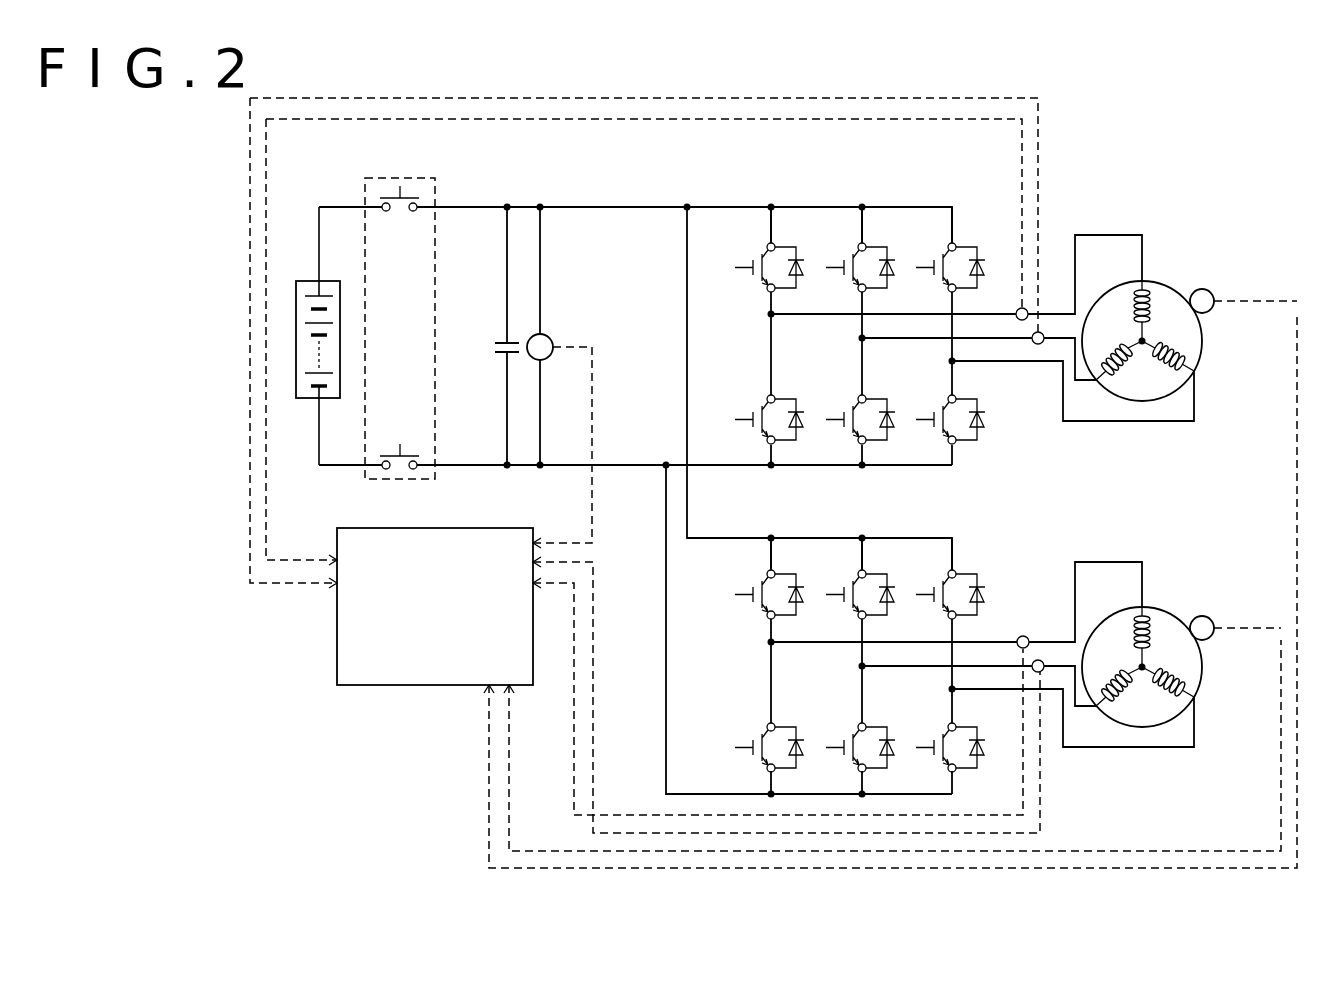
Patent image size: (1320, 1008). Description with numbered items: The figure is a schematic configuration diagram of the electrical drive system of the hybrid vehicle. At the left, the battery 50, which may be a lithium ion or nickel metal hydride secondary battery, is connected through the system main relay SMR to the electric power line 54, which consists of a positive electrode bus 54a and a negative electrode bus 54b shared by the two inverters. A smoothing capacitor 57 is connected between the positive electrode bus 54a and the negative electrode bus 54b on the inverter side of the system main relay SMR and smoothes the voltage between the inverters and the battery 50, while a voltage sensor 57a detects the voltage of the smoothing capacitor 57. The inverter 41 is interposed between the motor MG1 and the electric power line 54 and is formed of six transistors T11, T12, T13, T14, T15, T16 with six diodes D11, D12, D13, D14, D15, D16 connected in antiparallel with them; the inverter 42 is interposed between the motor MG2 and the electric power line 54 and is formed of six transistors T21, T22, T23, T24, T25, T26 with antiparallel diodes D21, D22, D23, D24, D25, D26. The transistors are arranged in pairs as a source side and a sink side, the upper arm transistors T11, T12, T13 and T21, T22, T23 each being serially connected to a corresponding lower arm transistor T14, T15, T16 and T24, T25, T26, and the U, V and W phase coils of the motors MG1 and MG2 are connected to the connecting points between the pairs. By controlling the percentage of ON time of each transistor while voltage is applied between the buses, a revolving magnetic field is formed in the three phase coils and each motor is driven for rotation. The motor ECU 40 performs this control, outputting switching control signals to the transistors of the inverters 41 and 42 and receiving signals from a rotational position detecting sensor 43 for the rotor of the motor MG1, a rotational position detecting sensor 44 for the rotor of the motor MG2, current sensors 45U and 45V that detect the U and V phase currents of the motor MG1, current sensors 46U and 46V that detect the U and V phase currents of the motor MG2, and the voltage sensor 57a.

The motor ECU 40 is at (434, 686).
The inverter 41 is at (905, 198).
The inverter 42 is at (900, 525).
The rotational position detecting sensor 43 is at (1202, 289).
The rotational position detecting sensor 44 is at (1202, 616).
The current sensor 45U is at (1020, 322).
The current sensor 45V is at (1038, 345).
The current sensor 46U is at (1022, 636).
The current sensor 46V is at (1040, 660).
The battery 50 is at (318, 282).
The electric power line 54 is at (700, 165).
The positive electrode bus 54a is at (653, 207).
The negative electrode bus 54b is at (607, 465).
The smoothing capacitor 57 is at (508, 338).
The voltage sensor 57a is at (556, 335).
The system main relay SMR is at (404, 178).
The motor MG1 is at (1105, 287).
The motor MG2 is at (1108, 608).
The transistor T11 is at (740, 290).
The transistor T12 is at (834, 278).
The transistor T13 is at (925, 278).
The transistor T14 is at (734, 431).
The transistor T15 is at (834, 431).
The transistor T16 is at (924, 431).
The transistor T21 is at (736, 615).
The transistor T22 is at (825, 607).
The transistor T23 is at (925, 607).
The transistor T24 is at (732, 758).
The transistor T25 is at (824, 758).
The transistor T26 is at (918, 758).
The diode D11 is at (804, 250).
The diode D12 is at (897, 249).
The diode D13 is at (986, 247).
The diode D14 is at (804, 401).
The diode D15 is at (897, 401).
The diode D16 is at (987, 404).
The diode D21 is at (804, 576).
The diode D22 is at (897, 576).
The diode D23 is at (986, 575).
The diode D24 is at (805, 729).
The diode D25 is at (895, 730).
The diode D26 is at (985, 730).